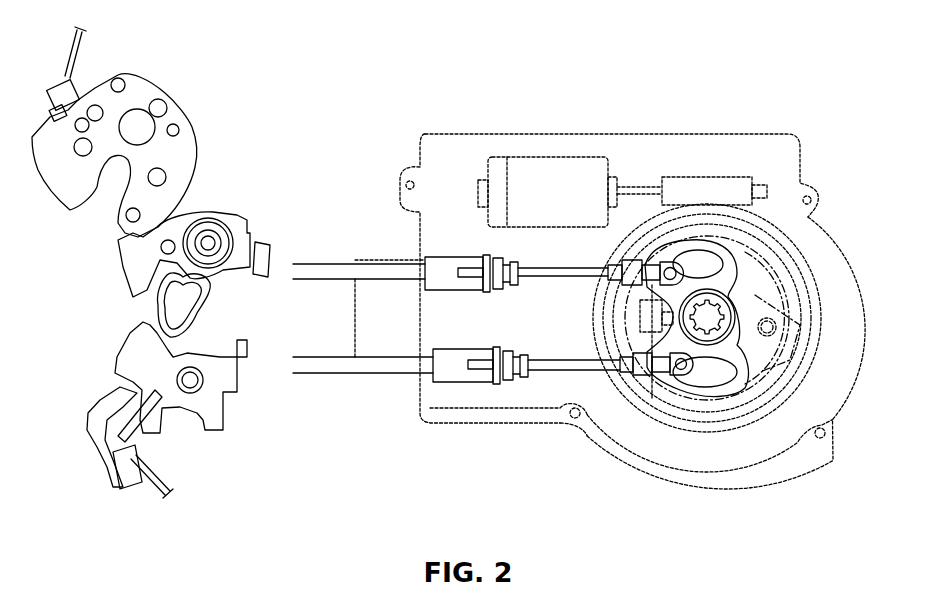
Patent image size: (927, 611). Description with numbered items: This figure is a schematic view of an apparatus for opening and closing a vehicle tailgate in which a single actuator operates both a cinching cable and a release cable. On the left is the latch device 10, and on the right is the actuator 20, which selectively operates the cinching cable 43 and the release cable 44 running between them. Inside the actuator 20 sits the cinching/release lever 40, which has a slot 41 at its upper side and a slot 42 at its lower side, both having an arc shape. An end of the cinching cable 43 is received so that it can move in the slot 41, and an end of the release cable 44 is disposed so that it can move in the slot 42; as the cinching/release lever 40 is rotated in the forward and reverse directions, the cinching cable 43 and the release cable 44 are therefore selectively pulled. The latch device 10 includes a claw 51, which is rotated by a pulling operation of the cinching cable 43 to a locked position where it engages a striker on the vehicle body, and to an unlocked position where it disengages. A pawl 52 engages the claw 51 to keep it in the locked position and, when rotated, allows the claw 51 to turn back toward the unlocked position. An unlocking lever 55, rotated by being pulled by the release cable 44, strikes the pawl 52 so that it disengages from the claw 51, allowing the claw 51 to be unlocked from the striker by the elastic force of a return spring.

The latch device 10 is at (237, 128).
The actuator 20 is at (638, 125).
The cinching/release lever 40 is at (750, 280).
The slot 41 is at (700, 253).
The slot 42 is at (853, 387).
The cinching cable 43 is at (78, 54).
The release cable 44 is at (153, 477).
The claw 51 is at (168, 90).
The pawl 52 is at (245, 222).
The unlocking lever 55 is at (123, 333).